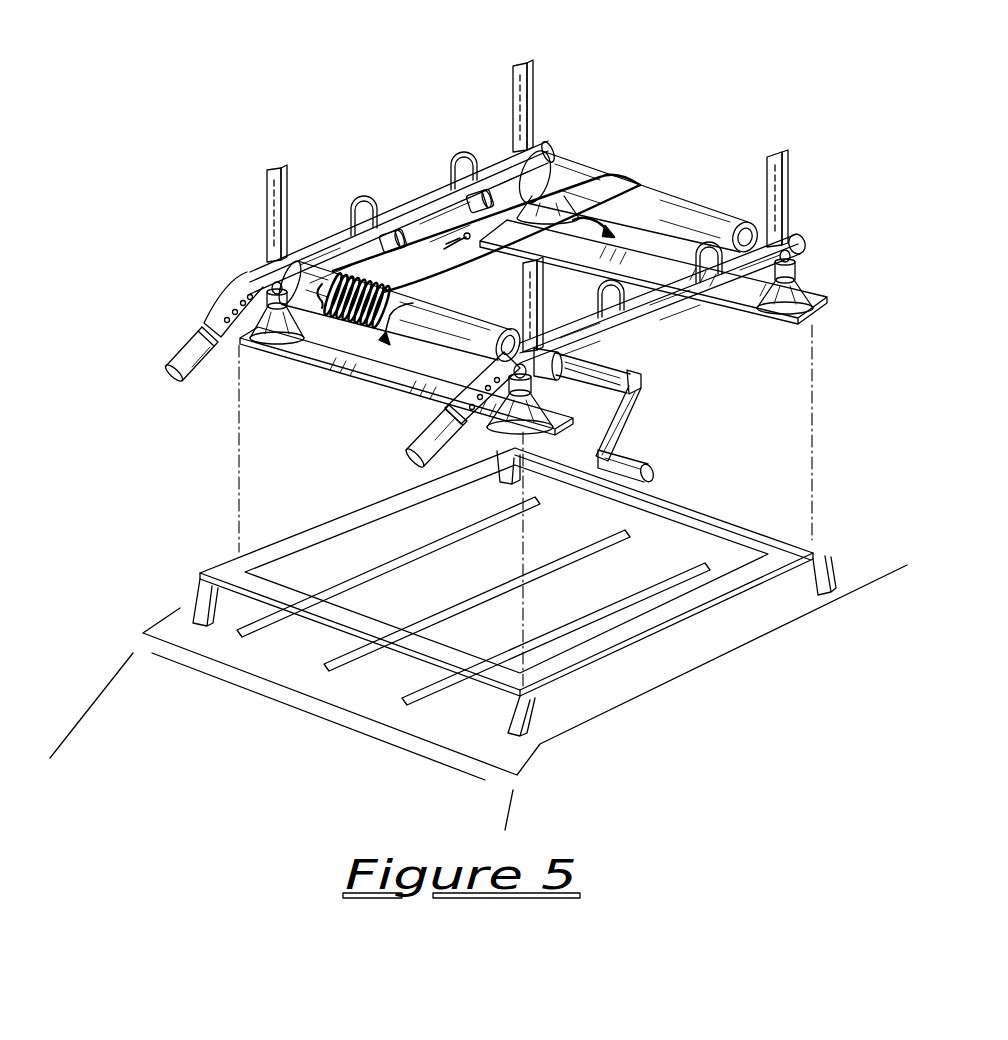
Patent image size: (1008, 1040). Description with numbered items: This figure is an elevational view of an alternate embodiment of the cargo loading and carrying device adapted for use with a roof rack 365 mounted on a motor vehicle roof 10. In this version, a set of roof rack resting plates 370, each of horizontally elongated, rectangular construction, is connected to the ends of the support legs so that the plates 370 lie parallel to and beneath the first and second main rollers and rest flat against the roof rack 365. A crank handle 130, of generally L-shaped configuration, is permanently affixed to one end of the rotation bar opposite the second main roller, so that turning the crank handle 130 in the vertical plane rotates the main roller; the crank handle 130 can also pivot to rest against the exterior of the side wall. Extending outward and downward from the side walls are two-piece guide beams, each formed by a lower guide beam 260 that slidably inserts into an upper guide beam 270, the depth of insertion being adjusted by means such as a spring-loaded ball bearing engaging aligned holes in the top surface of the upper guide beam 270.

The motor vehicle roof 10 is at (760, 610).
The crank handle 130 is at (637, 457).
The lower guide beam 260 is at (167, 355).
The upper guide beam 270 is at (217, 303).
The roof rack 365 is at (680, 618).
The roof rack resting plates 370 is at (343, 377).